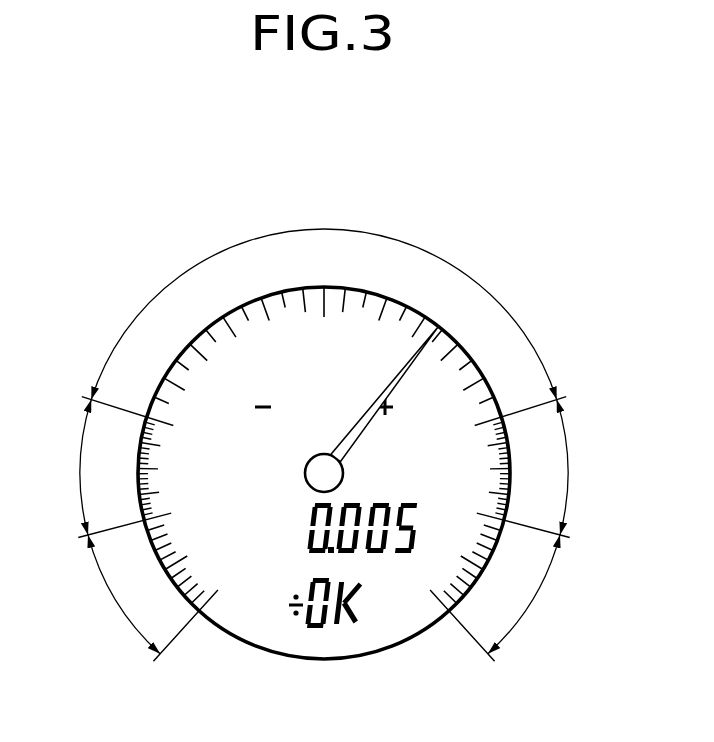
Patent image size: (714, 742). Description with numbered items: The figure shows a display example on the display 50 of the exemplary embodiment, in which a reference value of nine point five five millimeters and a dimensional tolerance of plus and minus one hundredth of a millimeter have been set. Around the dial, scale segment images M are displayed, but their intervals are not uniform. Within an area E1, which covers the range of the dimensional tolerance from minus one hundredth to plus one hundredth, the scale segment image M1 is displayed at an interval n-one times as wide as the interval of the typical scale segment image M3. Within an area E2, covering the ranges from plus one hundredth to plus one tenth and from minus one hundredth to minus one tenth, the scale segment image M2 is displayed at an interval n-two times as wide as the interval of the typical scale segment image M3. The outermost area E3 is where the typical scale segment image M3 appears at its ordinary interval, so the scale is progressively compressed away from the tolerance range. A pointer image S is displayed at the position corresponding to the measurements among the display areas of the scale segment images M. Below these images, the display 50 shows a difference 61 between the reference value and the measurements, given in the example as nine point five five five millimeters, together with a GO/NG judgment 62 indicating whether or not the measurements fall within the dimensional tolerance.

The display 50 is at (456, 202).
The scale segment images M is at (478, 362).
The scale segment image M1 is at (402, 308).
The scale segment image M2 is at (140, 480).
The typical scale segment image M3 is at (175, 558).
The area E1 is at (323, 301).
The area E2 is at (325, 467).
The third region of scale E3 is at (325, 594).
The pointer image S is at (353, 423).
The difference 61 is at (292, 524).
The GO/NG judgment 62 is at (284, 618).